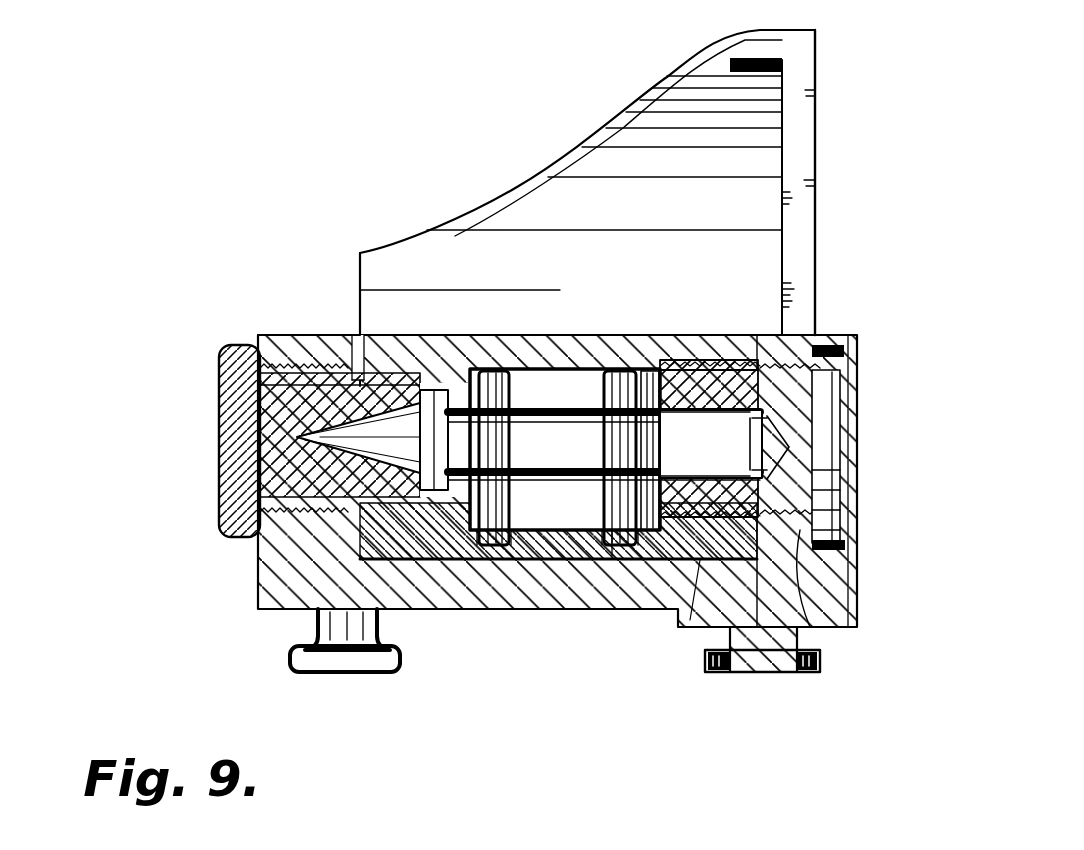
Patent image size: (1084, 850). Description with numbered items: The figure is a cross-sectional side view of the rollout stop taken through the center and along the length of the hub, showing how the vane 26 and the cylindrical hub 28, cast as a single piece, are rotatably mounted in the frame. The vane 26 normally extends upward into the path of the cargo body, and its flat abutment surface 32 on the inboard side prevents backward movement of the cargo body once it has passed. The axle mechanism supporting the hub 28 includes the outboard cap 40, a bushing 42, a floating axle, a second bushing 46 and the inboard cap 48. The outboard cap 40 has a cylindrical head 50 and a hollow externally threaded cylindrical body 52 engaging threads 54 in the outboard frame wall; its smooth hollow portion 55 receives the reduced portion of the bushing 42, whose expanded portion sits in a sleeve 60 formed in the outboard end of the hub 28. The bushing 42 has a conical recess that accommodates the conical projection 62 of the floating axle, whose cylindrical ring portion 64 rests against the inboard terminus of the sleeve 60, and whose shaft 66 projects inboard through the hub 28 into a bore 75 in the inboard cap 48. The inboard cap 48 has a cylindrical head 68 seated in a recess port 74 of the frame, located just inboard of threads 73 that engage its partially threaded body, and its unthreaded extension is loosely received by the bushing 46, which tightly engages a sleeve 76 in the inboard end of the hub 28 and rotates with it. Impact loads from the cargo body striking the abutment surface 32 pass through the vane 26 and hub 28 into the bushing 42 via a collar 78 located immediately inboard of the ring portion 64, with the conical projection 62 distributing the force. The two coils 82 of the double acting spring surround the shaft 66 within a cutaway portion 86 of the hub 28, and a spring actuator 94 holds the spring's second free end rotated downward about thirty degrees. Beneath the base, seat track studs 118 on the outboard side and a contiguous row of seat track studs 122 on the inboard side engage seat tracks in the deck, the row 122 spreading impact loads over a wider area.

The vane 26 is at (685, 252).
The cylindrical hub 28 is at (370, 332).
The abutment surface 32 is at (813, 92).
The outboard cap 40 is at (200, 410).
The bushing 42 is at (222, 377).
The bushing 46 is at (702, 570).
The inboard cap 48 is at (866, 490).
The cylindrical head 50 is at (218, 503).
The threaded cylindrical body 52 is at (228, 534).
The threads 54 is at (318, 507).
The hollow portion 55 is at (327, 507).
The sleeve 60 is at (292, 331).
The conical projection 62 is at (224, 461).
The cylindrical ring portion 64 is at (433, 506).
The shaft 66 is at (600, 441).
The cylindrical head 68 is at (837, 428).
The threads 73 is at (833, 627).
The recess port 74 is at (861, 358).
The bore 75 is at (758, 490).
The sleeve 76 is at (748, 334).
The collar 78 is at (456, 372).
The coils 82 is at (497, 545).
The cutaway portion 86 is at (558, 392).
The spring actuator 94 is at (622, 527).
The seat track studs 118 is at (348, 673).
The row of seat track studs 122 is at (763, 676).